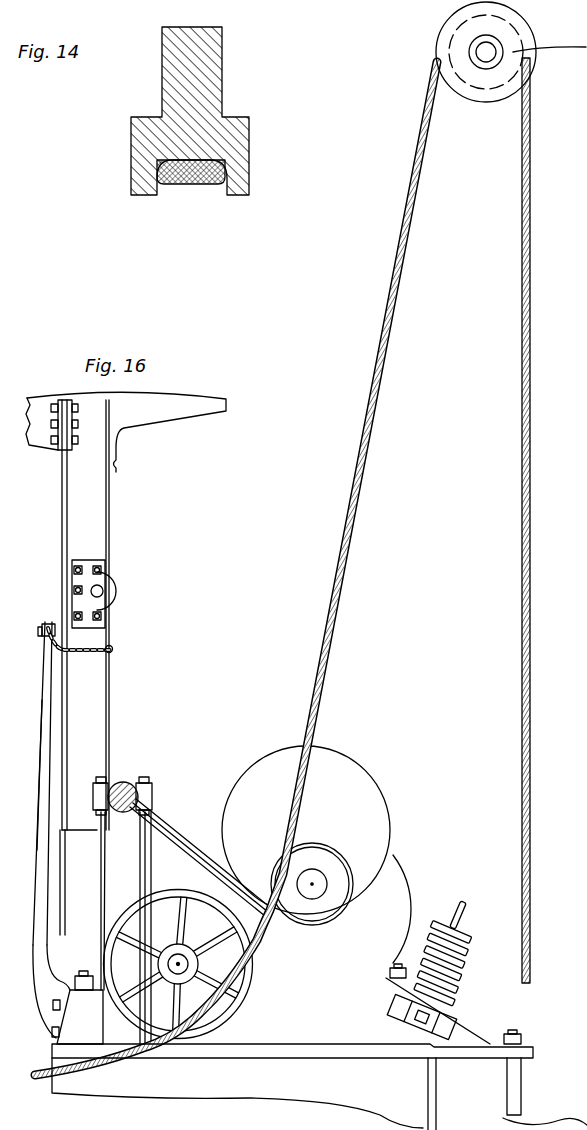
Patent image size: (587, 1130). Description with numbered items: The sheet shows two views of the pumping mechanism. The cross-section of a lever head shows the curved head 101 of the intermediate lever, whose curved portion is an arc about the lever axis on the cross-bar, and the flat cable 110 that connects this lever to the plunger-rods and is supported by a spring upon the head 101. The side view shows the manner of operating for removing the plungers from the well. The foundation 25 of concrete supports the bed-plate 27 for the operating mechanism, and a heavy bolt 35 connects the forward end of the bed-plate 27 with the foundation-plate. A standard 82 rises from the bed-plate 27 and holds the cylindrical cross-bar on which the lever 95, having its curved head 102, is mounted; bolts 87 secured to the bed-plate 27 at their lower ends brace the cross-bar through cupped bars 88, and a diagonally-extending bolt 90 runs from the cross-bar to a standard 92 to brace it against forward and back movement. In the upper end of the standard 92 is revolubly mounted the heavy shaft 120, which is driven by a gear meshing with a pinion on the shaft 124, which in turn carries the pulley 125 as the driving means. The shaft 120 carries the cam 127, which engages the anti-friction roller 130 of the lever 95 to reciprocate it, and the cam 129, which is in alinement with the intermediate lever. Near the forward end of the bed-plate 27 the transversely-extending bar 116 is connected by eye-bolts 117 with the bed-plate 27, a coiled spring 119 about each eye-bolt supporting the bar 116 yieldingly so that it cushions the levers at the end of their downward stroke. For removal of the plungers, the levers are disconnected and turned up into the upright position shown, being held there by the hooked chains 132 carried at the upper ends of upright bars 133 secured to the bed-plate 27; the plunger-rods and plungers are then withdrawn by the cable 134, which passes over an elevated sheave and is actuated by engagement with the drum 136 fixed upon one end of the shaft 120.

In FIG. 14, the curved head 101 is at (222, 96).
In FIG. 14, the flat cable 110 is at (190, 183).
In FIG. 16, the curved head 102 is at (157, 415).
In FIG. 16, the lever 95 is at (90, 518).
In FIG. 16, the anti-friction roller 130 is at (113, 590).
In FIG. 16, the hooked chains 132 is at (86, 652).
In FIG. 16, the upright bars 133 is at (42, 770).
In FIG. 16, the cupped bars 88 is at (152, 805).
In FIG. 16, the diagonally-extending bolt 90 is at (190, 845).
In FIG. 16, the bolts 87 is at (146, 872).
In FIG. 16, the standard 82 is at (88, 900).
In FIG. 16, the shaft 124 is at (180, 960).
In FIG. 16, the pulley 125 is at (238, 1005).
In FIG. 16, the cam 127 is at (350, 772).
In FIG. 16, the drum 136 is at (290, 862).
In FIG. 16, the shaft 120 is at (313, 876).
In FIG. 16, the cam 129 is at (388, 872).
In FIG. 16, the standard 92 is at (348, 905).
In FIG. 16, the transversely-extending bar 116 is at (460, 905).
In FIG. 16, the coiled spring 119 is at (462, 958).
In FIG. 16, the eye-bolts 117 is at (452, 982).
In FIG. 16, the bed-plate 27 is at (478, 1044).
In FIG. 16, the cable 134 is at (518, 497).
In FIG. 16, the foundation 25 is at (422, 1080).
In FIG. 16, the heavy bolt 35 is at (516, 1080).